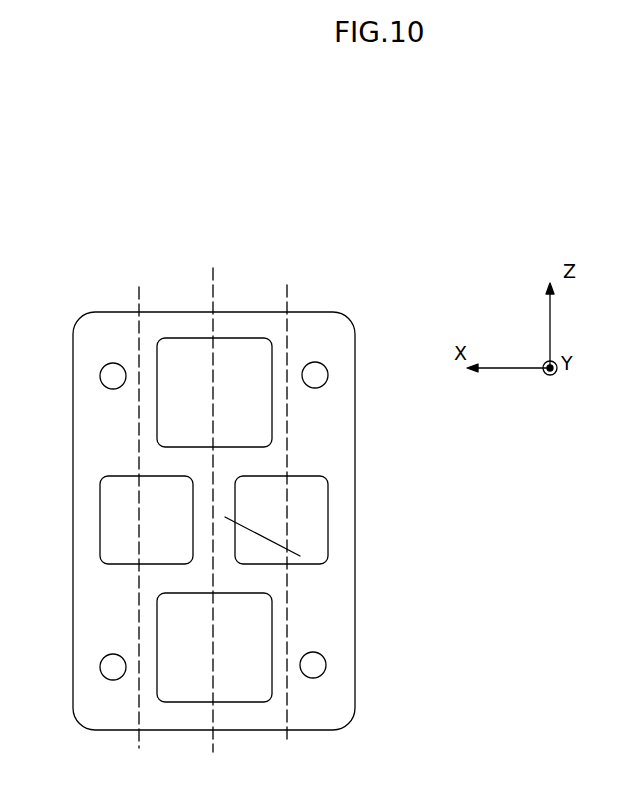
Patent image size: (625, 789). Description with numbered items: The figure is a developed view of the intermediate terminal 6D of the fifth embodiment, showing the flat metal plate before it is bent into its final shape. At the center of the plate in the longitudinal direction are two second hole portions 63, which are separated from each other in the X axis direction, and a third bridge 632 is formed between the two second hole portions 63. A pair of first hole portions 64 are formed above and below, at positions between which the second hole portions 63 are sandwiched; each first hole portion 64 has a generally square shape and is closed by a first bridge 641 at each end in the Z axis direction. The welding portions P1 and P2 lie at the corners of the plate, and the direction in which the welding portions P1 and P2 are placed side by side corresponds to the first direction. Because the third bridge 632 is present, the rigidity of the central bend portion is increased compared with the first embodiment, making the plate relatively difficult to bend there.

The intermediate terminal 6D is at (345, 252).
The welding portion P1 is at (118, 373).
The welding portion P2 is at (118, 666).
The first hole portion 64 is at (193, 343).
The first bridge 641 is at (240, 330).
The second hole portion 63 is at (165, 478).
The third bridge 632 is at (300, 556).